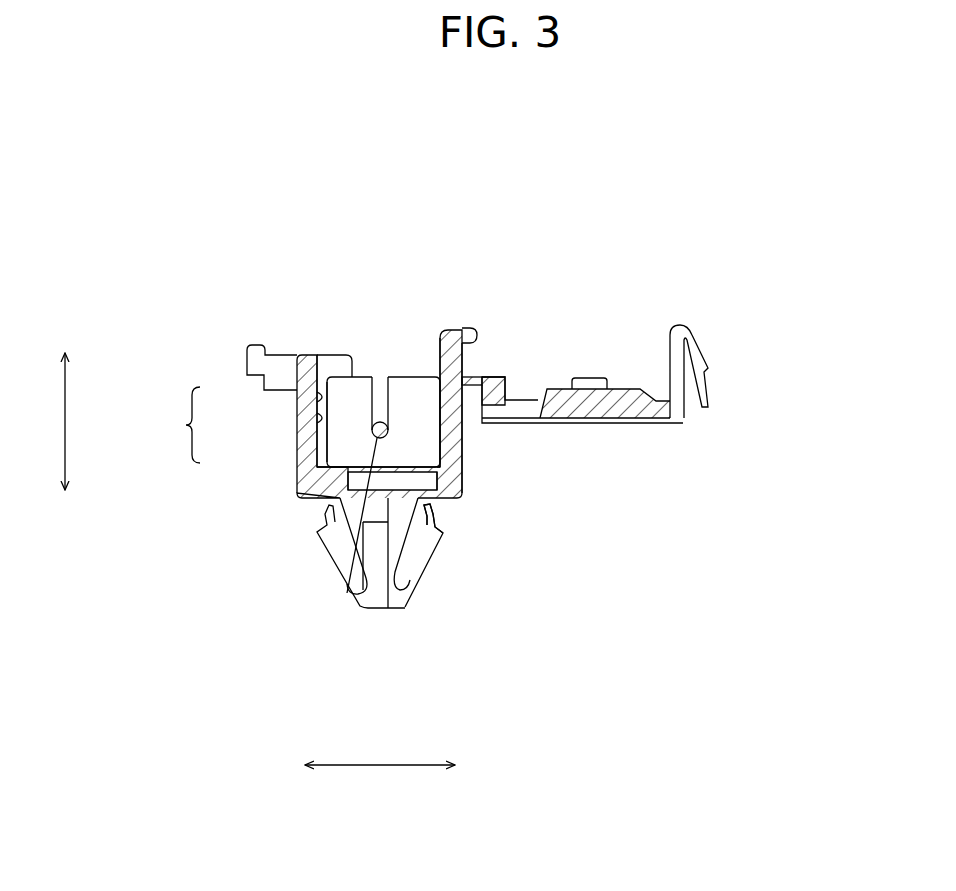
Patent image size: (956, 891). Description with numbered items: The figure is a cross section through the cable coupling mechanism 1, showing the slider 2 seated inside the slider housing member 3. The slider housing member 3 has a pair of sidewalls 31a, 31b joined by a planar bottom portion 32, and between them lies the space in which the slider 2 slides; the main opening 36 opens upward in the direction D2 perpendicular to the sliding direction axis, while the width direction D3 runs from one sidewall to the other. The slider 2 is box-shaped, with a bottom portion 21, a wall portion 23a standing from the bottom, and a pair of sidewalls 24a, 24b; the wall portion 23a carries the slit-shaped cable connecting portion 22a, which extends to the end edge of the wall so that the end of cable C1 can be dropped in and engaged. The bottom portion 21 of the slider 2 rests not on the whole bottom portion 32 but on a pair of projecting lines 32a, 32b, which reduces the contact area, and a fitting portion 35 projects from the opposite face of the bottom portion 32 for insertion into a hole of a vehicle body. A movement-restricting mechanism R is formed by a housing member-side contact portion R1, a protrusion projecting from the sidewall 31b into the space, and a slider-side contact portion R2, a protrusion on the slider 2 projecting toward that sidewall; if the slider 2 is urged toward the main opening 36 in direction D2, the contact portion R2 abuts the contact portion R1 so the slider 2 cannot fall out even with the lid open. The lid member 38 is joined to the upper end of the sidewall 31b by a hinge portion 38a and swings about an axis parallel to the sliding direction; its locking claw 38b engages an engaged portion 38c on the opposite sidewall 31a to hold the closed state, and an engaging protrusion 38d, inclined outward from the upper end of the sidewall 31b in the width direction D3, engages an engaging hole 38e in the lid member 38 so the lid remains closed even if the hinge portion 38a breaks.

The cable coupling mechanism 1 is at (684, 204).
The slider 2 is at (362, 372).
The slider housing member 3 is at (453, 327).
The bottom portion 21 is at (430, 523).
The cable connecting portion 22a is at (384, 398).
The wall portion 23a is at (341, 392).
The sidewall 24a is at (345, 477).
The sidewall 24b is at (445, 445).
The sidewall 31a is at (305, 372).
The sidewall 31b is at (455, 428).
The bottom portion 32 is at (364, 600).
The projecting line 32a is at (330, 507).
The projecting line 32b is at (420, 472).
The fitting portion 35 is at (398, 597).
The main opening 36 is at (319, 372).
The lid member 38 is at (618, 397).
The hinge portion 38a is at (474, 380).
The locking claw 38b is at (705, 367).
The engaged portion 38c is at (258, 368).
The engaging protrusion 38d is at (465, 332).
The engaging hole 38e is at (528, 400).
The movement-restricting mechanism R is at (179, 425).
The housing member-side contact portion R1 is at (320, 397).
The slider-side contact portion R2 is at (320, 418).
The cable C1 is at (347, 593).
The direction perpendicular to the sliding direction axis D2 is at (70, 423).
The width direction D3 is at (380, 767).